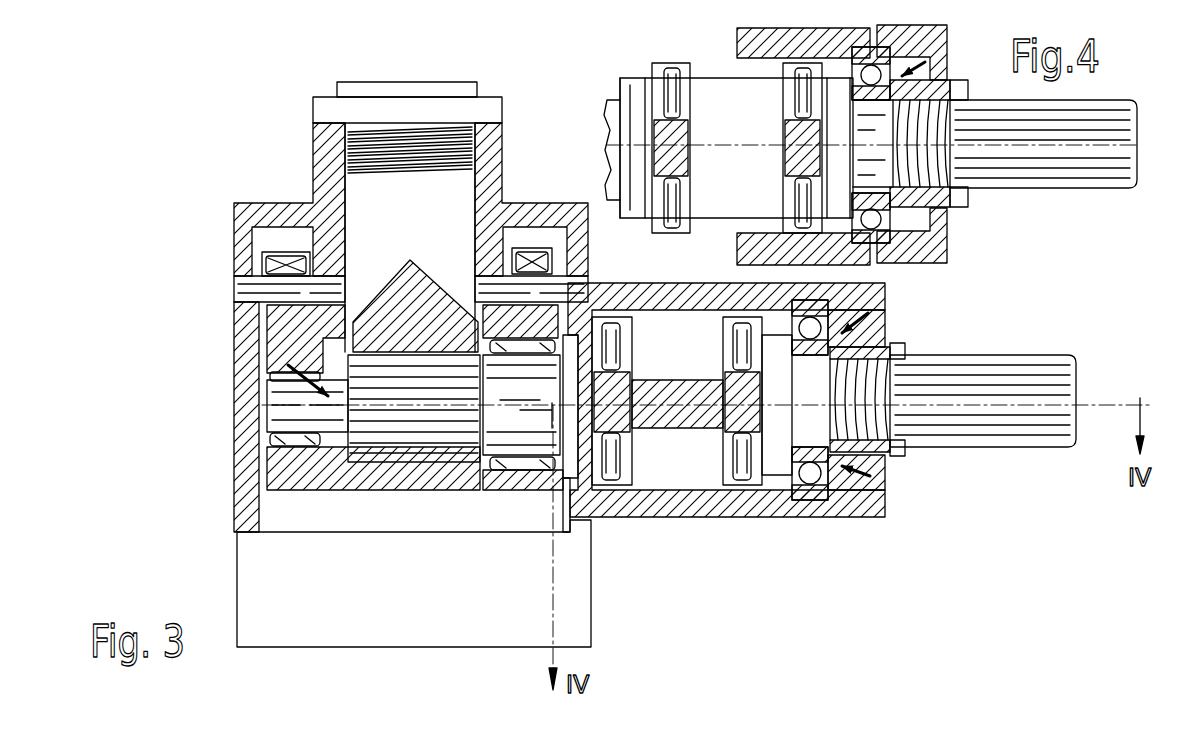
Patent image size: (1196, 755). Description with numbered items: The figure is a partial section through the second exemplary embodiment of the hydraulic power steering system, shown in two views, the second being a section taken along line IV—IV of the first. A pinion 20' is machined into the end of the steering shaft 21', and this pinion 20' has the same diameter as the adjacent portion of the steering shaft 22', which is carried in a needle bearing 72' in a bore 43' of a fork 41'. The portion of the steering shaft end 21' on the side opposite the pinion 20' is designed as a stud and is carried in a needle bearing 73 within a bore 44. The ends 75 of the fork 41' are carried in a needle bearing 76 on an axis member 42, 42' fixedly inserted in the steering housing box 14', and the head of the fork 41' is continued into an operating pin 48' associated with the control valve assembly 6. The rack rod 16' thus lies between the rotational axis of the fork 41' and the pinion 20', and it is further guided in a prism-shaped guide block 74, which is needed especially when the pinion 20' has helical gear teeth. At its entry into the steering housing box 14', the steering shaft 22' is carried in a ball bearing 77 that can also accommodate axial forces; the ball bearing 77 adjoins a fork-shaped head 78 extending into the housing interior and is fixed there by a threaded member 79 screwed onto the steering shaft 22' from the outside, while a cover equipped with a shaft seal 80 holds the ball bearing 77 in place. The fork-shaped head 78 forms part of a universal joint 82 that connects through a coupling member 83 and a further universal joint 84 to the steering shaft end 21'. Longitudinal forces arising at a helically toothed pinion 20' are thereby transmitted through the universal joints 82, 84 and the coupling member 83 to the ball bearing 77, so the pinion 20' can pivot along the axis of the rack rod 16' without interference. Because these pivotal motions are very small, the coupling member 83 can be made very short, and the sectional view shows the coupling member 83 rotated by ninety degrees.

In FIG. 3, the control valve assembly 6 is at (602, 605).
In FIG. 3, the steering housing box 14' is at (374, 327).
In FIG. 3, the rack rod 16' is at (415, 299).
In FIG. 3, the pinion 20' is at (373, 487).
In FIG. 3, the steering shaft end 21' is at (254, 350).
In FIG. 3, the steering shaft 22' is at (1000, 383).
In FIG. 4, the steering shaft 22' is at (1043, 172).
In FIG. 3, the fork 41' is at (414, 464).
In FIG. 3, the pin 42 is at (262, 290).
In FIG. 3, the axis member 42' is at (556, 278).
In FIG. 3, the bore 43' is at (521, 441).
In FIG. 3, the shaft 44 is at (268, 388).
In FIG. 3, the housing part 48' is at (497, 418).
In FIG. 3, the roller bearing 72' is at (488, 454).
In FIG. 3, the needle bearing 73 is at (290, 447).
In FIG. 3, the prism-shaped guide block 74 is at (427, 229).
In FIG. 3, the ends of the fork 75 is at (290, 254).
In FIG. 3, the needle bearing 76 is at (276, 268).
In FIG. 3, the ball bearing 77 is at (822, 503).
In FIG. 3, the fork-shaped head 78 is at (773, 492).
In FIG. 3, the threaded member 79 is at (895, 349).
In FIG. 4, the threaded member 79 is at (950, 208).
In FIG. 3, the shaft seal 80 is at (893, 480).
In FIG. 4, the shaft seal 80 is at (902, 214).
In FIG. 3, the universal joint 82 is at (747, 493).
In FIG. 4, the universal joint 82 is at (802, 58).
In FIG. 3, the coupling member 83 is at (672, 428).
In FIG. 4, the coupling member 83 is at (750, 179).
In FIG. 3, the universal joint 84 is at (627, 493).
In FIG. 4, the universal joint 84 is at (667, 58).